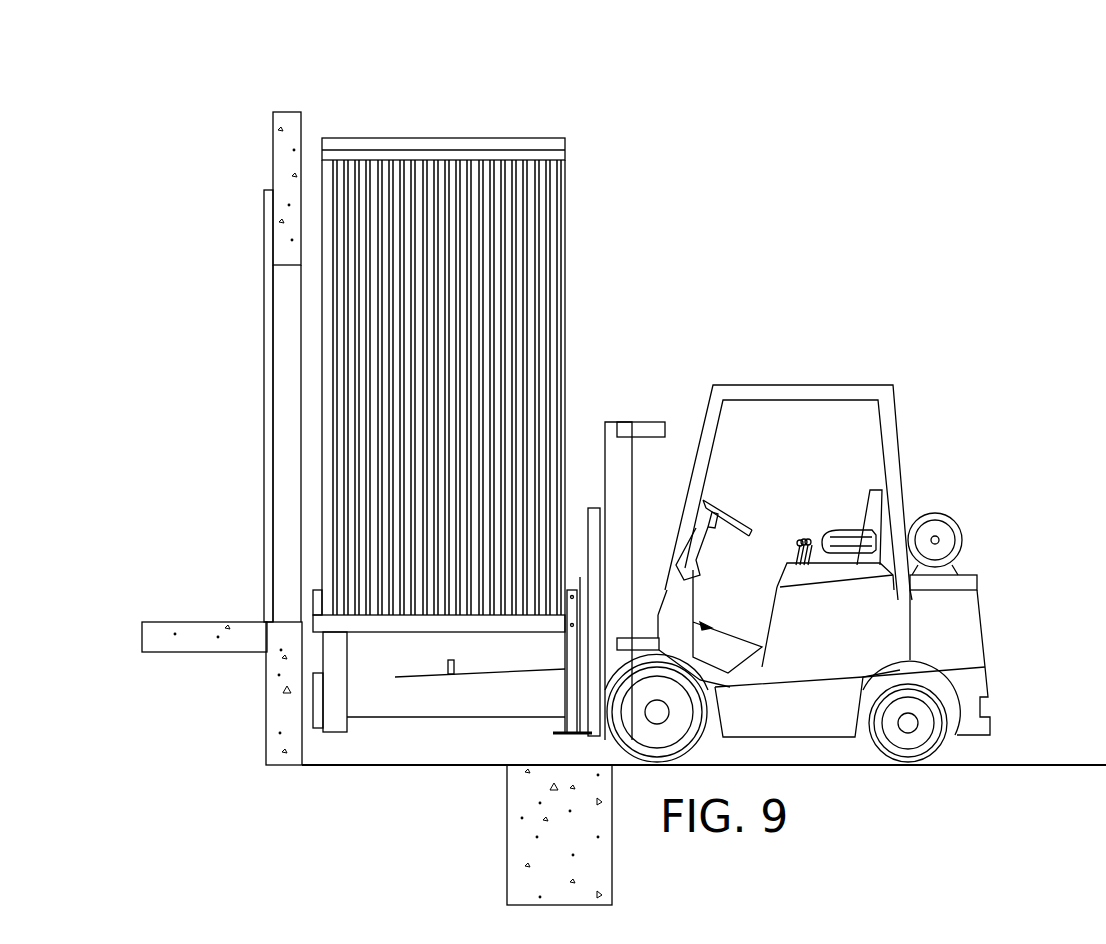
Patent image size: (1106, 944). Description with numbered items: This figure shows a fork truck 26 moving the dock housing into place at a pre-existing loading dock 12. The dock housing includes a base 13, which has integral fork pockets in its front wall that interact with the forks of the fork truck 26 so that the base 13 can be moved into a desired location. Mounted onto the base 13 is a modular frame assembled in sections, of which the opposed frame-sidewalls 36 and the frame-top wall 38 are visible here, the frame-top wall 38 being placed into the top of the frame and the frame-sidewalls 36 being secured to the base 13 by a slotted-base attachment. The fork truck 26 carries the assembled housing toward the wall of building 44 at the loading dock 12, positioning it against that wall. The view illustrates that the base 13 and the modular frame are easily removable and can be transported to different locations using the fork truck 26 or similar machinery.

The pre-existing loading dock 12 is at (243, 622).
The base 13 is at (340, 625).
The fork truck 26 is at (812, 392).
The frame-sidewalls 36 is at (510, 262).
The frame-top wall 38 is at (420, 138).
The wall of building 44 is at (282, 165).